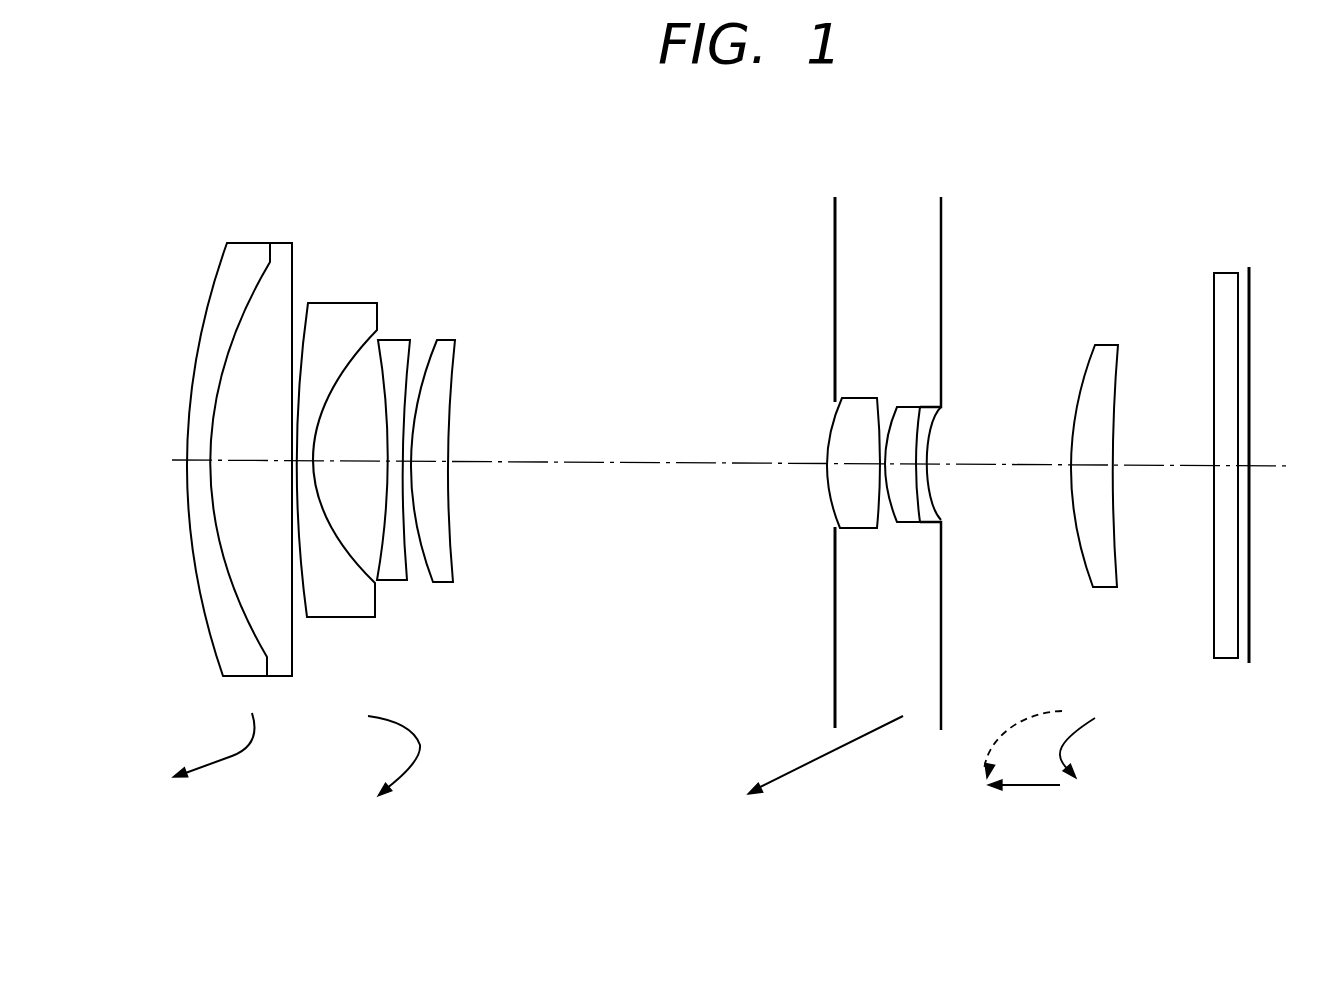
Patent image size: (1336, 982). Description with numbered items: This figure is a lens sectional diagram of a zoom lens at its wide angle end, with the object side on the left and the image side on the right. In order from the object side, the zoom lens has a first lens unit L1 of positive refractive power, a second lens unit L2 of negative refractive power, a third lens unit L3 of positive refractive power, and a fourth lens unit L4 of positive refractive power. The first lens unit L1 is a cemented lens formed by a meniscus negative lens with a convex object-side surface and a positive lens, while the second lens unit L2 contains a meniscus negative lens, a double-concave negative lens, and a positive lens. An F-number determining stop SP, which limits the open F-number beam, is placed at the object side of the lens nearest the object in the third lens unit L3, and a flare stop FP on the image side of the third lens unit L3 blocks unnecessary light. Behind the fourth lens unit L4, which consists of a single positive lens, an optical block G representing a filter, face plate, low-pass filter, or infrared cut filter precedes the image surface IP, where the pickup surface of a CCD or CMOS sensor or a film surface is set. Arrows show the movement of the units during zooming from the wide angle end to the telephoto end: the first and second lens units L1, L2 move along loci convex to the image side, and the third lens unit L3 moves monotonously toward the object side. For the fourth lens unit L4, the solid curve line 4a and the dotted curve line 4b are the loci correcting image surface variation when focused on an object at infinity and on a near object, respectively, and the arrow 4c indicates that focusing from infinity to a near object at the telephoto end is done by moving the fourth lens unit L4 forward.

The first lens unit L1 is at (215, 183).
The second lens unit L2 is at (325, 183).
The third lens unit L3 is at (823, 173).
The fourth lens unit L4 is at (1157, 175).
The F-number determining stop SP is at (834, 256).
The flare stop FP is at (944, 272).
The optical block G is at (1227, 273).
The image surface IP is at (1252, 387).
The solid curve line 4a is at (1080, 728).
The dotted curve line 4b is at (1012, 720).
The arrow 4c is at (1031, 786).